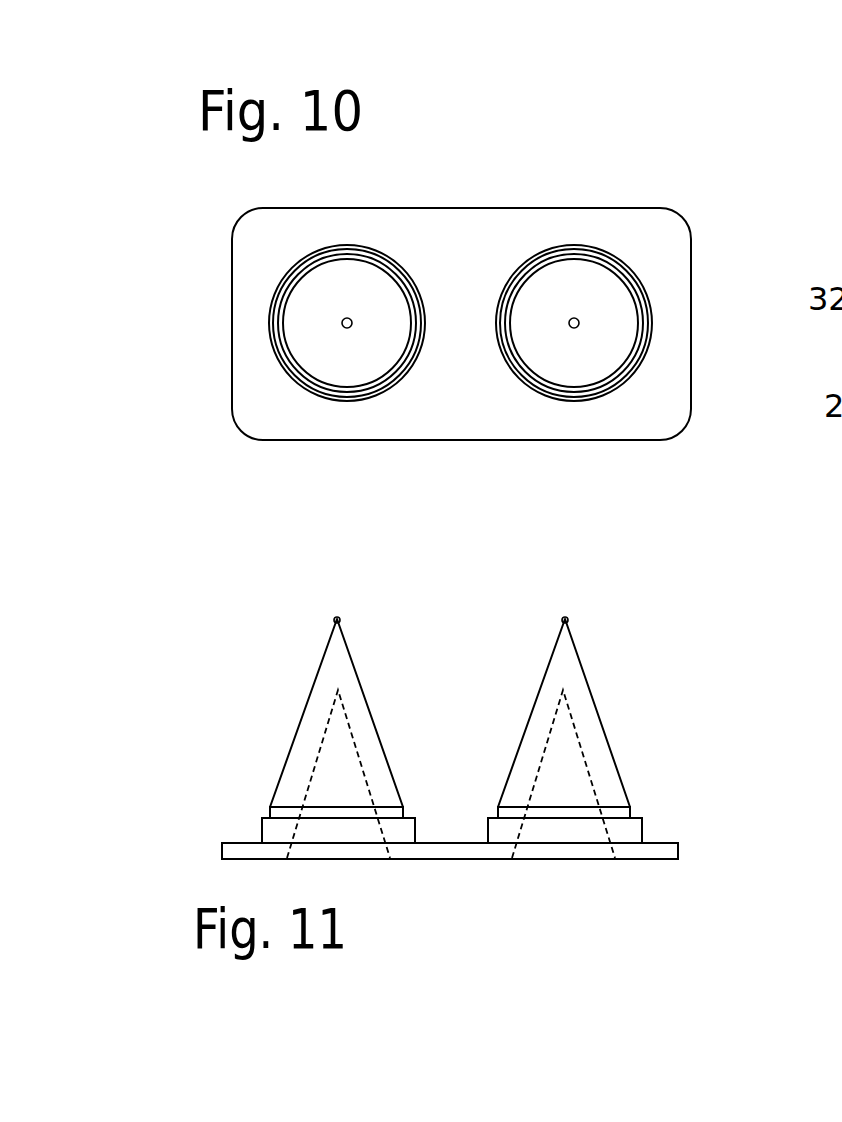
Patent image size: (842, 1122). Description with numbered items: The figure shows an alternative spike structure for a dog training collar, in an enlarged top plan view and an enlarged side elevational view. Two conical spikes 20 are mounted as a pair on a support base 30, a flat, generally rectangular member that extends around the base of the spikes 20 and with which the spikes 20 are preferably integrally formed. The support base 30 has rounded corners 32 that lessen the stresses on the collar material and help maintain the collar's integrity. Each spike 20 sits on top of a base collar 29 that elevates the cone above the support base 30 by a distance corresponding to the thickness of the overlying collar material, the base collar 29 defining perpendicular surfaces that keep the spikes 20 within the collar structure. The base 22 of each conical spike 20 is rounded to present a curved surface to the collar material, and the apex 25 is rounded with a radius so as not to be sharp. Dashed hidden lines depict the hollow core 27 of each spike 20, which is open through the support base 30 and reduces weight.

In FIG. 10, the spike 20 is at (335, 280).
In FIG. 11, the spike 20 is at (333, 683).
In FIG. 10, the base of the conical spike 22 is at (292, 377).
In FIG. 11, the base of the conical spike 22 is at (270, 808).
In FIG. 10, the apex 25 is at (570, 316).
In FIG. 11, the apex 25 is at (565, 617).
In FIG. 11, the hollow core 27 is at (352, 730).
In FIG. 10, the base collar 29 is at (343, 396).
In FIG. 11, the base collar 29 is at (272, 835).
In FIG. 10, the support base 30 is at (520, 407).
In FIG. 11, the support base 30 is at (435, 850).
In FIG. 10, the rounded corners 32 is at (678, 217).